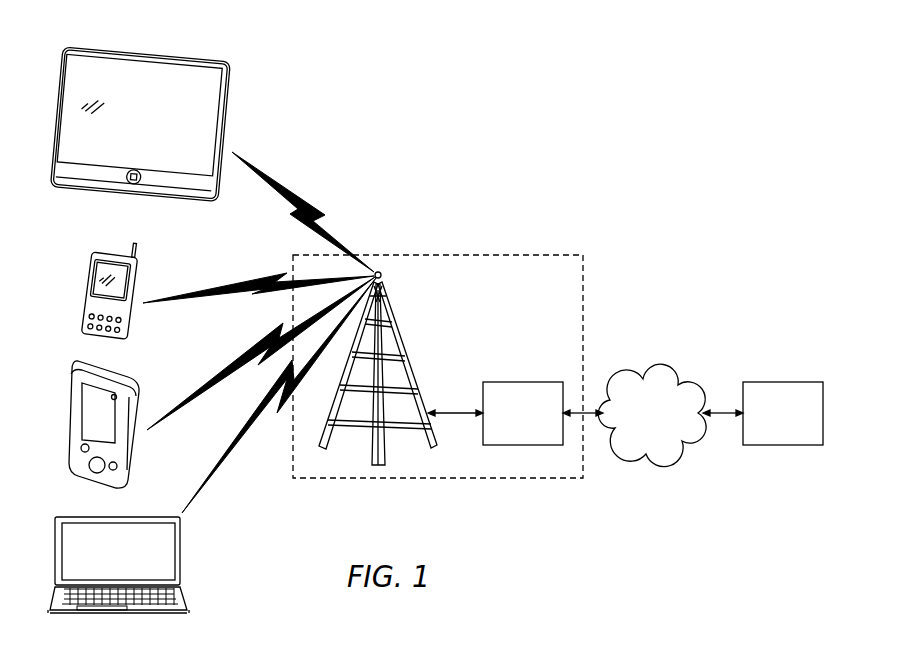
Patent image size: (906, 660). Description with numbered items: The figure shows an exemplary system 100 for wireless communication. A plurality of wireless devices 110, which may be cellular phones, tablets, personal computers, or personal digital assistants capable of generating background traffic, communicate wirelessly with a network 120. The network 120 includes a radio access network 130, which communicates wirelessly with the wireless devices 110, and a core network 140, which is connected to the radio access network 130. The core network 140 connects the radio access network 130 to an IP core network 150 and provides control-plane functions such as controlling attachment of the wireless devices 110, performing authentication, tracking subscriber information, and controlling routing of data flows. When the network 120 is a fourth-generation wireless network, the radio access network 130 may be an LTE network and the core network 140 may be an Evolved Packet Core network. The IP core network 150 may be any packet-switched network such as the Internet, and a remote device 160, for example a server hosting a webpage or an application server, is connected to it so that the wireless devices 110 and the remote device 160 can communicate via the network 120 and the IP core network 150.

The system 100 is at (496, 84).
The wireless device 110 is at (232, 80).
The network 120 is at (565, 253).
The radio access network 130 is at (402, 333).
The core network 140 is at (527, 380).
The IP core network 150 is at (677, 373).
The remote device 160 is at (788, 382).